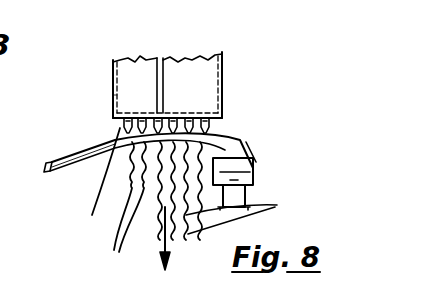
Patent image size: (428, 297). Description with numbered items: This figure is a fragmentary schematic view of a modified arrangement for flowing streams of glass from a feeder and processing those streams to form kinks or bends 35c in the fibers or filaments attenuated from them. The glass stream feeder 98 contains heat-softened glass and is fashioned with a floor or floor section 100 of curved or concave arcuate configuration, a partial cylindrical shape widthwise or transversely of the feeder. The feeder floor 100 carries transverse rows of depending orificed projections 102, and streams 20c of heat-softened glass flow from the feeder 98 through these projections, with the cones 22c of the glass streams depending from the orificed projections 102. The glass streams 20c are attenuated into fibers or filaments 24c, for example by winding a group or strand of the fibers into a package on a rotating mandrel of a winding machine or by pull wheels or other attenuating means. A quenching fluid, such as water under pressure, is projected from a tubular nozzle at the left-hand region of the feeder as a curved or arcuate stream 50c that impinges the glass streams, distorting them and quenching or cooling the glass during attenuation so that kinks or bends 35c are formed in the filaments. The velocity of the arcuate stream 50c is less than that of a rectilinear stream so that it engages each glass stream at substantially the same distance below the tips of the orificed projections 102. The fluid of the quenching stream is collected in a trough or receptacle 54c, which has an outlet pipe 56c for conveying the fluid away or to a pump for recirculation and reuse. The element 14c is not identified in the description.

The glass stream feeder 98 is at (110, 70).
The floor section 100 is at (197, 116).
The orificed projections 102 is at (145, 116).
The glass streams 20c is at (210, 130).
The cones 22c is at (115, 138).
The curved deflector sheet 14c is at (47, 170).
The trough 54c is at (262, 163).
The outlet pipe 56c is at (248, 200).
The fibers or filaments 24c is at (246, 214).
The stream 50c is at (92, 215).
The kinks or bends 35c is at (116, 250).